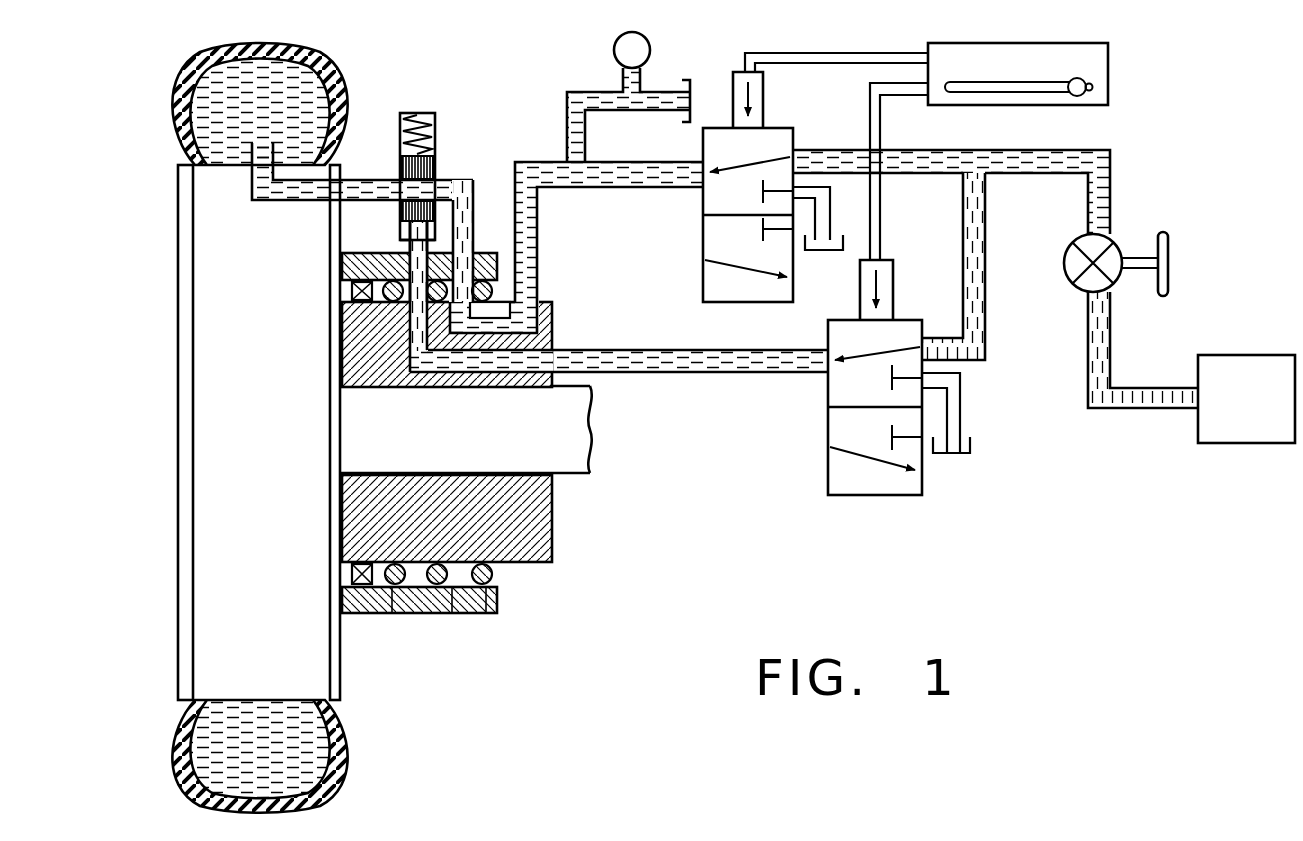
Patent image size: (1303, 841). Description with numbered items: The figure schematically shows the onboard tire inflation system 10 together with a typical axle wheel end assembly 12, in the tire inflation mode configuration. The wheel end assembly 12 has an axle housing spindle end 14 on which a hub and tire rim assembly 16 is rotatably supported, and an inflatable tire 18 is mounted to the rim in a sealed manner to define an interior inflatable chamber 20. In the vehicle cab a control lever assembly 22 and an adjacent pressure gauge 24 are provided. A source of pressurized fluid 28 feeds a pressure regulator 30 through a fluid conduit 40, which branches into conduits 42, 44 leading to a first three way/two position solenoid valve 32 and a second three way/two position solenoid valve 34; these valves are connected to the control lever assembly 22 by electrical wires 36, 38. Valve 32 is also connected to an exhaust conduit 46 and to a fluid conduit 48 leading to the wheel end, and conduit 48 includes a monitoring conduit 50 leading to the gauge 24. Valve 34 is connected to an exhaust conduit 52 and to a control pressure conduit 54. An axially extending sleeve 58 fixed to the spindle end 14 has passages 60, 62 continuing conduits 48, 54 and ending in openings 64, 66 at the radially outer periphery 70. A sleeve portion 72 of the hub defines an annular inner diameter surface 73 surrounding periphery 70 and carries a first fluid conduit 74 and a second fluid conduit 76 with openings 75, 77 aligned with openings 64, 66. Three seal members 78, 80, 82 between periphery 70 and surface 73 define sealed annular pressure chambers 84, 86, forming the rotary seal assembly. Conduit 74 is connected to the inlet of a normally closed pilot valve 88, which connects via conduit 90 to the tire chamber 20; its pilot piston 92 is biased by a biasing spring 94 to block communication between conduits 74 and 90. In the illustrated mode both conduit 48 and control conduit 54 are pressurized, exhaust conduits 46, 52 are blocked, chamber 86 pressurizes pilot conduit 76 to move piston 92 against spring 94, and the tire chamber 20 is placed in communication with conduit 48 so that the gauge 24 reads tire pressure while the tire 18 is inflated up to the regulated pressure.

The onboard tire inflation system 10 is at (510, 112).
The axle wheel end assembly 12 is at (442, 702).
The axle housing spindle end 14 is at (570, 428).
The hub and tire rim assembly 16 is at (342, 647).
The inflatable tire 18 is at (342, 722).
The interior inflatable chamber 20 is at (300, 762).
The control lever assembly 22 is at (1112, 55).
The pressure gauge 24 is at (612, 55).
The source of pressurized fluid 28 is at (1243, 355).
The pressure regulator 30 is at (1065, 262).
The first three way/two position solenoid valve 32 is at (698, 252).
The second three way/two position solenoid valve 34 is at (823, 412).
The electrical wire 36 is at (847, 64).
The electrical wire 38 is at (882, 120).
The fluid conduit 40 is at (1112, 187).
The conduit 42 is at (850, 148).
The conduit 44 is at (963, 242).
The exhaust conduit 46 is at (850, 235).
The fluid conduit 48 is at (658, 162).
The monitoring conduit 50 is at (585, 130).
The exhaust conduit 52 is at (962, 395).
The control pressure conduit 54 is at (690, 350).
The axially extending sleeve 58 is at (556, 527).
The passage 60 is at (477, 325).
The passage 62 is at (513, 360).
The opening 64 is at (460, 315).
The opening 66 is at (447, 344).
The radially outer periphery 70 is at (480, 550).
The sleeve portion 72 is at (454, 626).
The annular inner diameter surface 73 is at (378, 575).
The first fluid conduit 74 is at (472, 205).
The opening 75 is at (462, 280).
The second fluid conduit 76 is at (417, 270).
The opening 77 is at (415, 303).
The seal member 78 is at (490, 593).
The seal member 80 is at (457, 590).
The seal member 82 is at (398, 590).
The sealed annular pressure chamber 84 is at (462, 573).
The sealed annular pressure chamber 86 is at (420, 572).
The pilot valve 88 is at (394, 150).
The conduit 90 is at (363, 180).
The pilot piston 92 is at (402, 215).
The biasing spring 94 is at (413, 118).